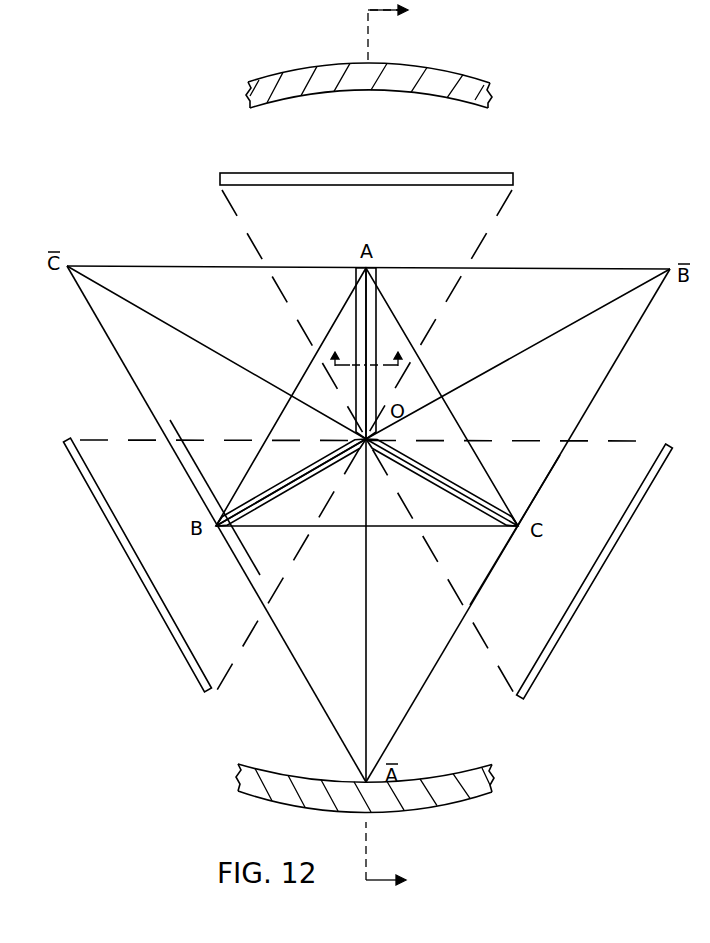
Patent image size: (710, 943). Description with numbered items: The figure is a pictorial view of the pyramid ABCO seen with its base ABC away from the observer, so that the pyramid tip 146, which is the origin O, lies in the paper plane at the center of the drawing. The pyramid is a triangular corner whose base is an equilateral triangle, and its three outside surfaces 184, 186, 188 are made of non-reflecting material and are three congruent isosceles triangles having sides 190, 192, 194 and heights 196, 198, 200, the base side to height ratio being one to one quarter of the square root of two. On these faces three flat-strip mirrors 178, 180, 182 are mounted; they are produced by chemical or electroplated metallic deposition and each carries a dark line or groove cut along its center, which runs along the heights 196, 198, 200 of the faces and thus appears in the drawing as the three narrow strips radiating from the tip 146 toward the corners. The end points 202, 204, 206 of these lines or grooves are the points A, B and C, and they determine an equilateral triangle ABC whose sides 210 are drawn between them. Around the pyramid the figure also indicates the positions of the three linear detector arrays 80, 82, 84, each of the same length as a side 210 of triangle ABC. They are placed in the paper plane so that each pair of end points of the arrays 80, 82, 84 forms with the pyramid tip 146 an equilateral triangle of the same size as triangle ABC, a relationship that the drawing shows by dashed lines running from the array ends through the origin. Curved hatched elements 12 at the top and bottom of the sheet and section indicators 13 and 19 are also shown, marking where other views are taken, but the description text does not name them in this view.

The lens element 12 is at (447, 72).
The section line 13- 13 is at (401, 446).
The section line 19- 19 is at (369, 350).
The linear detector array 80 is at (422, 173).
The linear detector array 82 is at (130, 565).
The linear detector array 84 is at (638, 507).
The pyramid tip 146 is at (340, 445).
The flat-strip mirror 178 is at (373, 300).
The flat-strip mirror 180 is at (261, 504).
The flat-strip mirror 182 is at (452, 483).
The pyramid surface 184 is at (552, 284).
The pyramid surface 186 is at (322, 677).
The pyramid surface 188 is at (403, 687).
The side 190 is at (316, 266).
The side 192 is at (192, 490).
The side 194 is at (497, 563).
The height 196 is at (368, 382).
The height 198 is at (311, 474).
The height 200 is at (462, 497).
The end point 202 is at (370, 267).
The end point 204 is at (212, 528).
The end point 206 is at (520, 526).
The side 210 is at (283, 411).